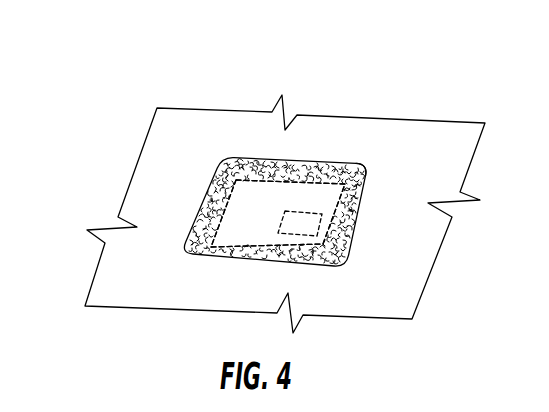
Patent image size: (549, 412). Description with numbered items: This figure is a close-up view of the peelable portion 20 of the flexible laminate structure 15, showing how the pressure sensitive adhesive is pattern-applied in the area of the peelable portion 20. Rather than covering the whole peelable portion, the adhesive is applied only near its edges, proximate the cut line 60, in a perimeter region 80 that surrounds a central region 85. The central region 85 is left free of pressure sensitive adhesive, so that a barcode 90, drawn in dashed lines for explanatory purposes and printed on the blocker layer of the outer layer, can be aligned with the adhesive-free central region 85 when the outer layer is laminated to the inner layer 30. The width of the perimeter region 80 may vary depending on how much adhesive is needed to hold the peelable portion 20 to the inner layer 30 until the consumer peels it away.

The flexible laminate structure 15 is at (123, 85).
The peelable portion 20 is at (314, 138).
The inner layer 30 is at (235, 196).
The cut line 60 is at (245, 157).
The perimeter region 80 is at (348, 165).
The central region 85 is at (233, 224).
The barcode 90 is at (322, 204).